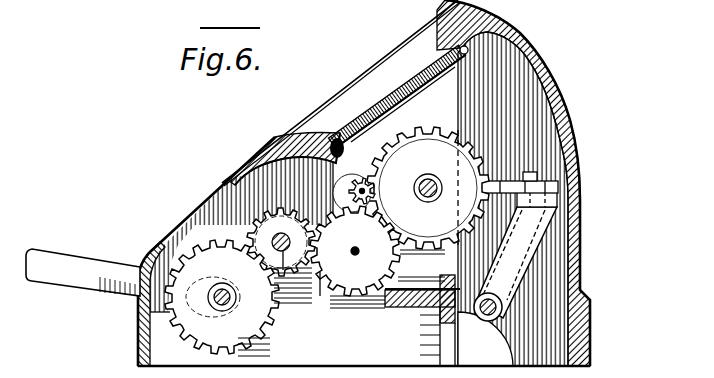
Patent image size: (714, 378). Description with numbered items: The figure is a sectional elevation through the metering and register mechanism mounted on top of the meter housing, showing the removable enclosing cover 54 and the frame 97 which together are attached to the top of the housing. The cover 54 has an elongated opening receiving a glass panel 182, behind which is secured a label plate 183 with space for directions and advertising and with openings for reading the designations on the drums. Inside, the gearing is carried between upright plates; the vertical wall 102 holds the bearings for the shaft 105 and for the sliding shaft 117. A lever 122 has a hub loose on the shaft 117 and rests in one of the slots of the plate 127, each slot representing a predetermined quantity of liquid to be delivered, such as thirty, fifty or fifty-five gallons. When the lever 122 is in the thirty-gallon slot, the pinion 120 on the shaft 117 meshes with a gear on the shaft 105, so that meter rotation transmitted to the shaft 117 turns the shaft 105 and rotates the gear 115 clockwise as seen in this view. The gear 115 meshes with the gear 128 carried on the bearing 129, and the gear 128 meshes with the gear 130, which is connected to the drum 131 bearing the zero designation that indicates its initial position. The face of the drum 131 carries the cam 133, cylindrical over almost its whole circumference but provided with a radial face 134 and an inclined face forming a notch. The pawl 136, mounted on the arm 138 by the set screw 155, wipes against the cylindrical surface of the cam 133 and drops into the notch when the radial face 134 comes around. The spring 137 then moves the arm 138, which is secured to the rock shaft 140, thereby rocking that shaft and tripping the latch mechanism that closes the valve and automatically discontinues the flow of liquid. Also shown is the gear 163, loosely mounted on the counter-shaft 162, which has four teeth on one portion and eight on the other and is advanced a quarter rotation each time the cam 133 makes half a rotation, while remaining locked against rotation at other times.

The enclosing cover 54 is at (560, 95).
The frame 97 is at (440, 313).
The vertical wall 102 is at (378, 135).
The shaft 105 is at (276, 284).
The gear 115 is at (274, 206).
The sliding shaft 117 is at (229, 305).
The pinion 120 is at (187, 213).
The lever 122 is at (48, 255).
The plate 127 is at (138, 342).
The gear 128 is at (335, 270).
The bearing 129 is at (358, 253).
The gear 130 is at (432, 128).
The drum 131 is at (490, 153).
The cam 133 is at (390, 150).
The radial face 134 is at (424, 126).
The pawl 136 is at (485, 180).
The spring 137 is at (533, 265).
The arm 138 is at (503, 300).
The rock shaft 140 is at (497, 313).
The set screw 155 is at (532, 173).
The counter-shaft 162 is at (345, 187).
The gear 163 is at (352, 248).
The glass panel 182 is at (392, 90).
The label plate 183 is at (418, 66).